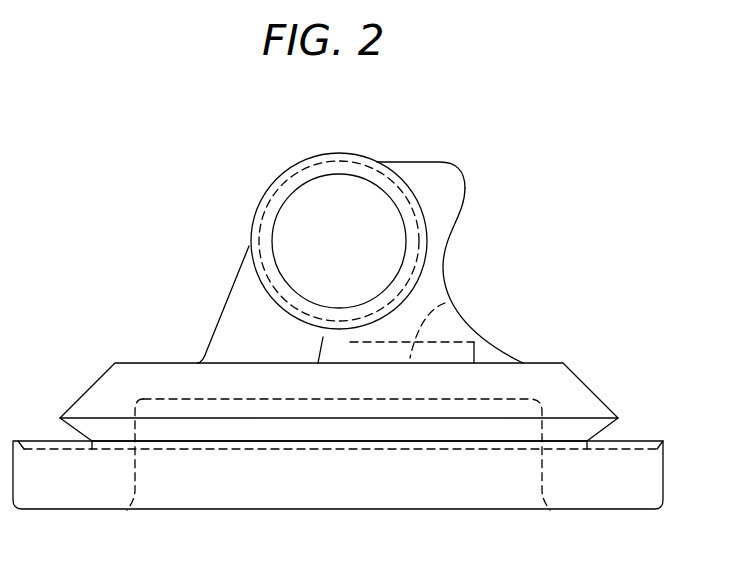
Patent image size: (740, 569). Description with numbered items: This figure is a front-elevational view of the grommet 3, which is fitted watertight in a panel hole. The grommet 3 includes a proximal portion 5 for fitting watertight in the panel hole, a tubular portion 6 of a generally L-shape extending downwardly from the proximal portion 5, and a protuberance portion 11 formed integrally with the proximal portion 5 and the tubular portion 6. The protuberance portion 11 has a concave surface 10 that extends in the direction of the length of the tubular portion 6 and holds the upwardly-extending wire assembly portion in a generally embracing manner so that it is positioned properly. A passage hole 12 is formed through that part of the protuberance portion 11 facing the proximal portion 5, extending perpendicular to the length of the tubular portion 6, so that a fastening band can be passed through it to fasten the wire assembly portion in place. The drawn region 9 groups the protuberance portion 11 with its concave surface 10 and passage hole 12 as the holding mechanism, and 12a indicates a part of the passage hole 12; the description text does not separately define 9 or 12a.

The grommet 3 is at (182, 270).
The proximal portion 5 is at (142, 362).
The tubular portion 6 is at (279, 186).
The bearing holder 9 is at (583, 127).
The concave surface 10 is at (448, 233).
The protuberance portion 11 is at (447, 177).
The passage hole 12 is at (445, 303).
The projection of lower portion 12a is at (475, 358).